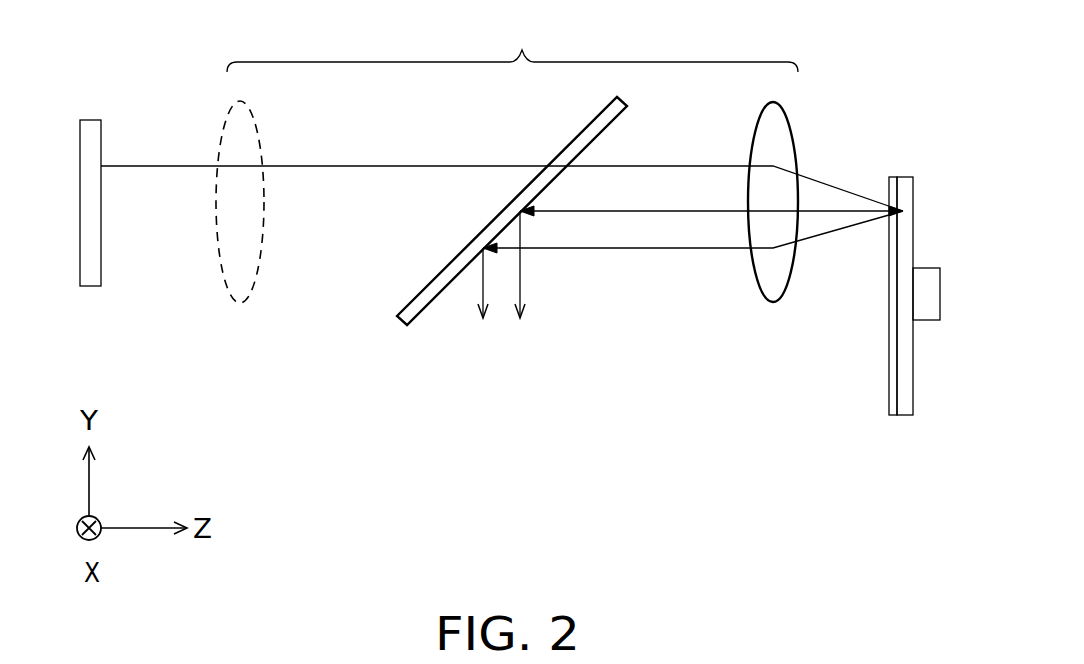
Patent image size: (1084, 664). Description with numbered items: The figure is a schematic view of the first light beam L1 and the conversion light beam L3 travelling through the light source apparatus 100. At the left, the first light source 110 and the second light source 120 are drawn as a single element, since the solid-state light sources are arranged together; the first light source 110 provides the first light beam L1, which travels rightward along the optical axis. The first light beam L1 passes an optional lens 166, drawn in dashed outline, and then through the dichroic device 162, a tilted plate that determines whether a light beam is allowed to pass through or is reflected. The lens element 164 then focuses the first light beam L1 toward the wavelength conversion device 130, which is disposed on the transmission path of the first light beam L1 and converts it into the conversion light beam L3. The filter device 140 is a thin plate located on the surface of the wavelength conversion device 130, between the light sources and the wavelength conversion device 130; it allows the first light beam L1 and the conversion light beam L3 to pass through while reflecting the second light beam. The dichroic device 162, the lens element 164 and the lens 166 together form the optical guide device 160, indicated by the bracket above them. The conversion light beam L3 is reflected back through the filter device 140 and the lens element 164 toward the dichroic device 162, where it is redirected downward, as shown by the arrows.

The light source apparatus 100 is at (497, 264).
The first light source 110 is at (96, 243).
The second light source 120 is at (89, 286).
The wavelength conversion device 130 is at (905, 177).
The filter device 140 is at (893, 177).
The optical guide device 160 is at (512, 42).
The dichroic device 162 is at (440, 295).
The lens element 164 is at (773, 303).
The lens 166 is at (257, 283).
The first light beam L1 is at (356, 166).
The conversion light beam L3 is at (659, 212).